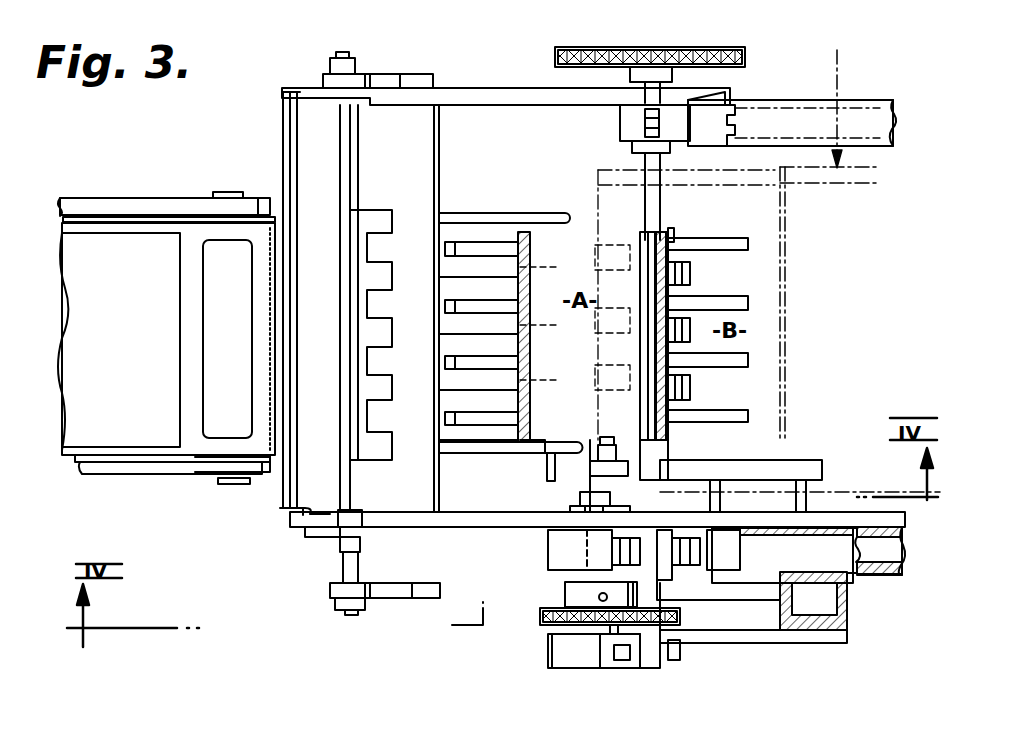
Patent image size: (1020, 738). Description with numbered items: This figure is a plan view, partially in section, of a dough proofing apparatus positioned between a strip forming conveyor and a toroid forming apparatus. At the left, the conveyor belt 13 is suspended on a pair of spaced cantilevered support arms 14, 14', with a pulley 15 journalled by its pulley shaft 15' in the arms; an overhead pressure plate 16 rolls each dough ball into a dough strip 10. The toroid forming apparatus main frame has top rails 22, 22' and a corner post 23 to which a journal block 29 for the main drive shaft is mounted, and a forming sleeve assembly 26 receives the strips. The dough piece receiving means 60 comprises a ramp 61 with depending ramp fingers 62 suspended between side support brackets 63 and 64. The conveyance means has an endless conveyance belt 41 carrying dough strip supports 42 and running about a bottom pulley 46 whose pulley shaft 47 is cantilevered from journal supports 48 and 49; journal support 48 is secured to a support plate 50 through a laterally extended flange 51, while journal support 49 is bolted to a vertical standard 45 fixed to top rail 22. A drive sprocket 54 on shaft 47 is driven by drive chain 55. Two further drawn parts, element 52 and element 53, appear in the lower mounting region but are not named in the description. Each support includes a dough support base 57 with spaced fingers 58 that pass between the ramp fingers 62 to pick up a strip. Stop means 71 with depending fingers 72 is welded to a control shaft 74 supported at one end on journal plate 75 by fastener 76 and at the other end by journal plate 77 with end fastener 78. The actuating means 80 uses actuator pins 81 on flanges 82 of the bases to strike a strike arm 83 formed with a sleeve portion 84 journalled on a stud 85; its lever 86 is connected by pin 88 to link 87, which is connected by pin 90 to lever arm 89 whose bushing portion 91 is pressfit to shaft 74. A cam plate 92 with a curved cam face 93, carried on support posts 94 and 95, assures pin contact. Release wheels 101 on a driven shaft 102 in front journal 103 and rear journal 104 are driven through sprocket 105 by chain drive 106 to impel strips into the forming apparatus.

The dough strip 10 is at (200, 240).
The conveyor belt 13 is at (120, 230).
The cantilevered support arm 14 is at (157, 493).
The cantilevered support arm 14' is at (59, 184).
The pulley 15 is at (202, 494).
The pulley shaft 15' is at (230, 162).
The pressure plate 16 is at (166, 339).
The top rail 22 is at (903, 559).
The top rail 22' is at (892, 94).
The corner post 23 is at (745, 98).
The forming sleeve assembly 26 is at (829, 233).
The journal block 29 is at (750, 560).
The conveyance belt 41 is at (530, 232).
The dough strip supports 42 is at (750, 302).
The vertical standard 45 is at (847, 615).
The bottom pulley 46 is at (585, 250).
The pulley shaft 47 is at (575, 652).
The journal support 48 is at (560, 558).
The journal support 49 is at (605, 687).
The support plate 50 is at (870, 545).
The laterally extended flange 51 is at (668, 600).
The base plate 52 is at (810, 645).
The angle bracket 53 is at (662, 668).
The drive sprocket 54 is at (570, 604).
The drive chain 55 is at (545, 625).
The dough support base 57 is at (518, 372).
The fingers 58 is at (478, 305).
The dough piece receiving means 60 is at (276, 92).
The ramp 61 is at (305, 118).
The ramp fingers 62 is at (450, 242).
The side support bracket 63 is at (435, 598).
The side support bracket 64 is at (435, 78).
The stop means 71 is at (378, 210).
The depending fingers 72 is at (392, 340).
The control shaft 74 is at (325, 265).
The journal plate 75 is at (400, 80).
The fastener 76 is at (345, 58).
The journal plate 77 is at (385, 608).
The end fastener 78 is at (343, 610).
The actuating means 80 is at (298, 542).
The actuator pin 81 is at (545, 478).
The flange 82 is at (522, 454).
The strike arm 83 is at (612, 440).
The sleeve portion 84 is at (600, 465).
The stud 85 is at (592, 440).
The lever 86 is at (575, 517).
The link 87 is at (428, 517).
The pin 88 is at (588, 489).
The lever arm 89 is at (365, 533).
The pin 90 is at (290, 508).
The bushing portion 91 is at (330, 553).
The cam plate 92 is at (810, 462).
The curved cam face 93 is at (672, 440).
The support post 94 is at (710, 475).
The support post 95 is at (800, 490).
The release wheels 101 is at (692, 273).
The driven shaft 102 is at (655, 197).
The front journal 103 is at (728, 575).
The rear journal 104 is at (635, 118).
The sprocket 105 is at (645, 75).
The chain drive 106 is at (590, 47).